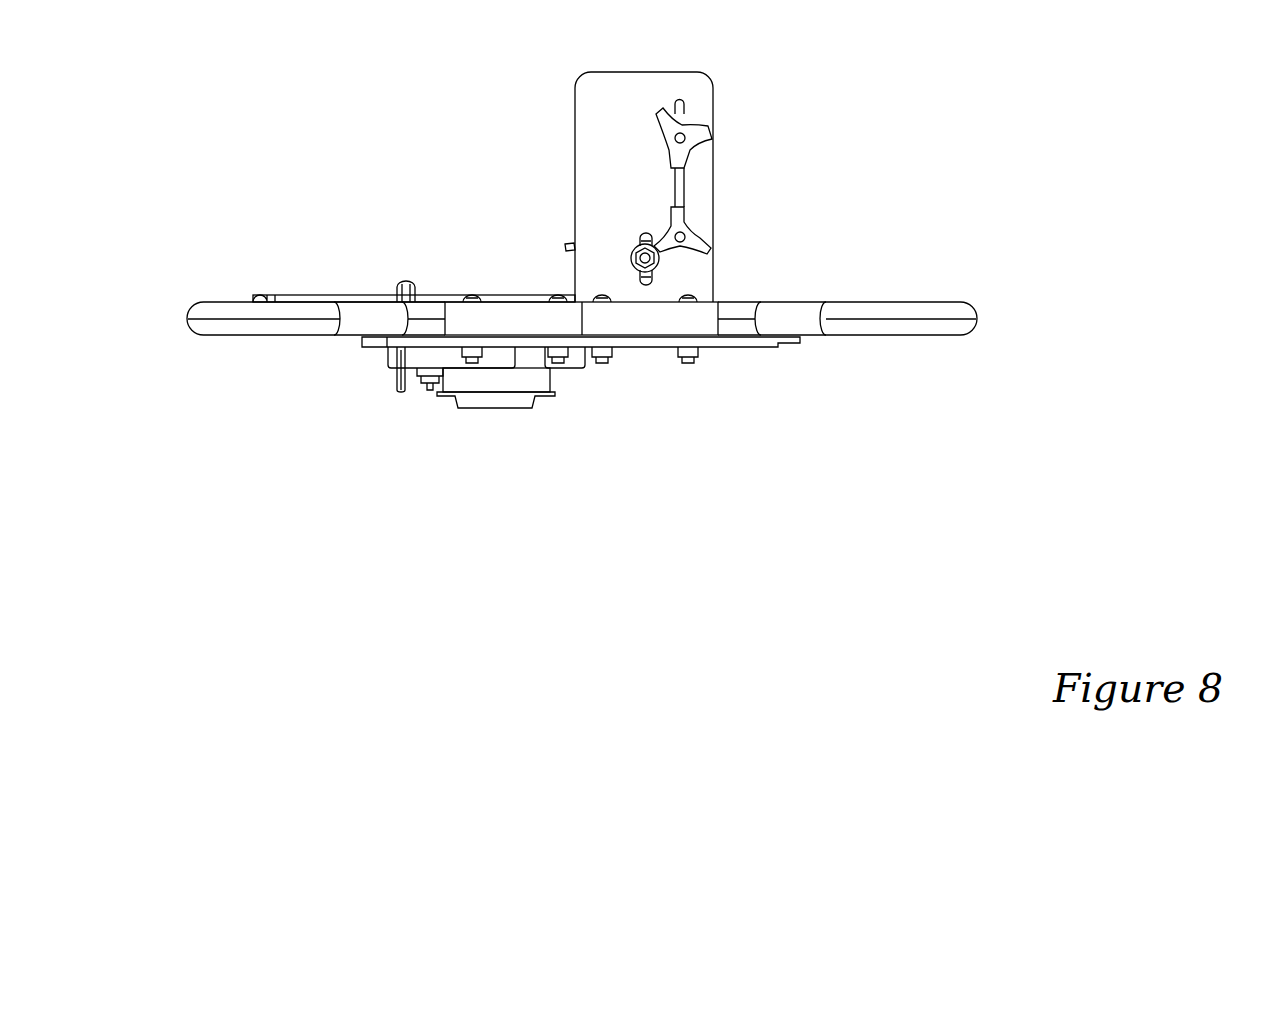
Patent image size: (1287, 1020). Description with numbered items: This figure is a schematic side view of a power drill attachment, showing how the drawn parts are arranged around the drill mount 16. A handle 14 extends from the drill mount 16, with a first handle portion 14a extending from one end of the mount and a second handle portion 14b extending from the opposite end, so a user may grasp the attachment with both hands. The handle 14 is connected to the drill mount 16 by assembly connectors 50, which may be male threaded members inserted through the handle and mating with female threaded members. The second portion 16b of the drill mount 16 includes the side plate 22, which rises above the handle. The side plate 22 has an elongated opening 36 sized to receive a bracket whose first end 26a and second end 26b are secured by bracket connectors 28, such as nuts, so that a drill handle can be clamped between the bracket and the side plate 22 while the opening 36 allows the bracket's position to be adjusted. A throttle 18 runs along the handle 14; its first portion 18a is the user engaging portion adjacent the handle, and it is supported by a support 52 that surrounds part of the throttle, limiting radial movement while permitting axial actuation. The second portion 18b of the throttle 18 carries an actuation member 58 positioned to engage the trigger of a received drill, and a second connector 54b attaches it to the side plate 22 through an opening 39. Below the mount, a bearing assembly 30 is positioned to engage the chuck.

The handle 14 is at (808, 325).
The first handle portion 14a is at (190, 296).
The second handle portion 14b is at (977, 287).
The drill mount 16 is at (818, 246).
The second portion of the drill mount 16b is at (552, 127).
The throttle 18 is at (345, 298).
The first portion of the throttle 18a is at (272, 281).
The second portion of the throttle 18b is at (561, 258).
The side plate 22 is at (601, 80).
The first end of the bracket 26a is at (686, 143).
The second end of the bracket 26b is at (686, 245).
The bracket connectors 28 is at (703, 131).
The bearing assembly 30 is at (548, 423).
The opening 36 is at (683, 102).
The opening 39 is at (647, 234).
The assembly connectors 50 is at (430, 390).
The support 52 is at (400, 284).
The second connector 54b is at (636, 251).
The actuation member 58 is at (569, 244).